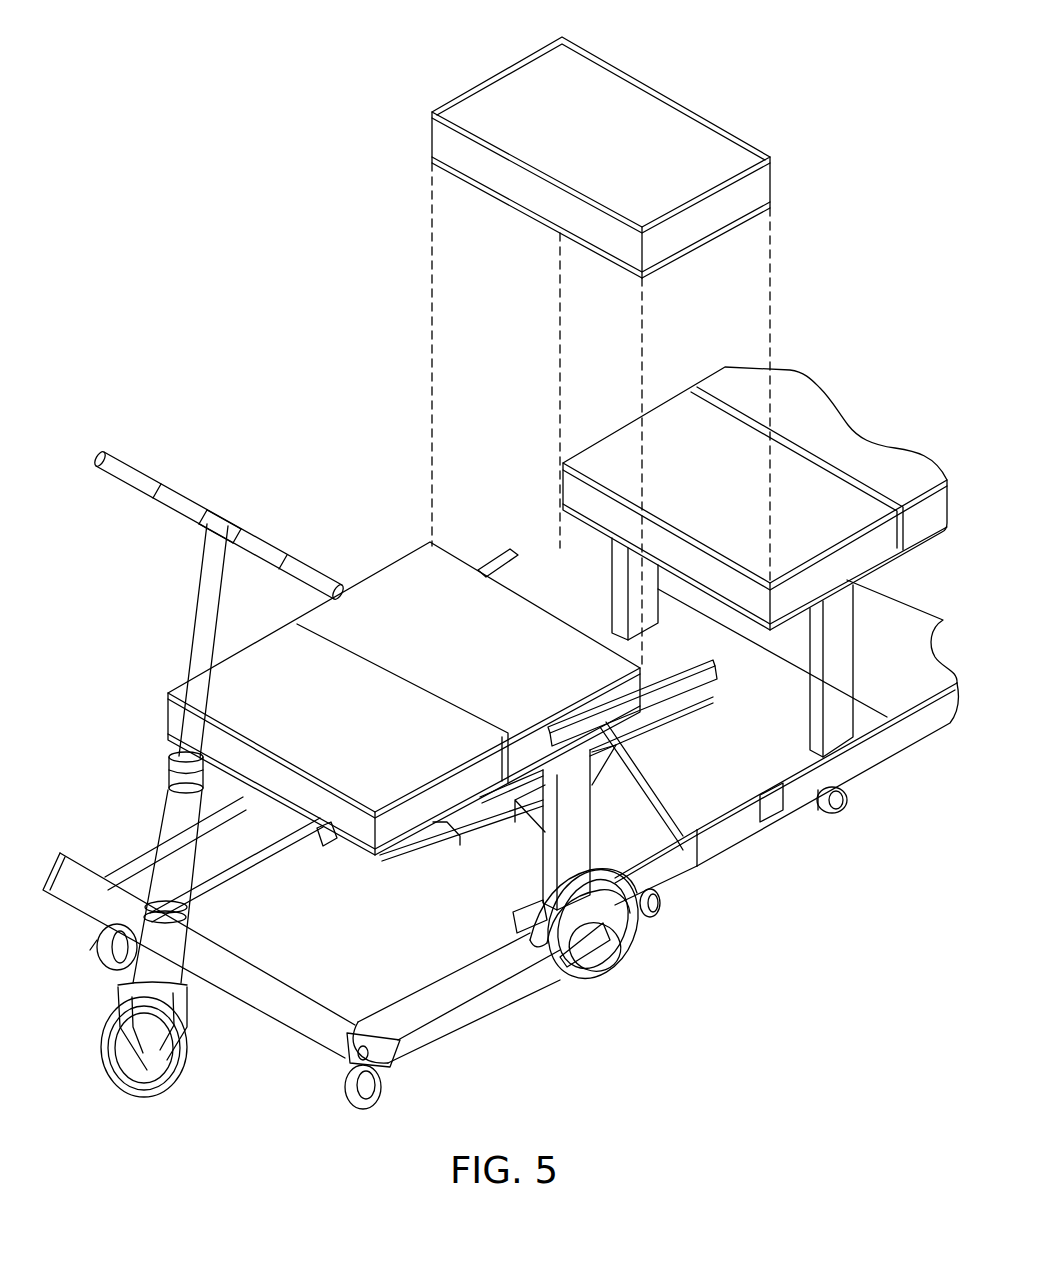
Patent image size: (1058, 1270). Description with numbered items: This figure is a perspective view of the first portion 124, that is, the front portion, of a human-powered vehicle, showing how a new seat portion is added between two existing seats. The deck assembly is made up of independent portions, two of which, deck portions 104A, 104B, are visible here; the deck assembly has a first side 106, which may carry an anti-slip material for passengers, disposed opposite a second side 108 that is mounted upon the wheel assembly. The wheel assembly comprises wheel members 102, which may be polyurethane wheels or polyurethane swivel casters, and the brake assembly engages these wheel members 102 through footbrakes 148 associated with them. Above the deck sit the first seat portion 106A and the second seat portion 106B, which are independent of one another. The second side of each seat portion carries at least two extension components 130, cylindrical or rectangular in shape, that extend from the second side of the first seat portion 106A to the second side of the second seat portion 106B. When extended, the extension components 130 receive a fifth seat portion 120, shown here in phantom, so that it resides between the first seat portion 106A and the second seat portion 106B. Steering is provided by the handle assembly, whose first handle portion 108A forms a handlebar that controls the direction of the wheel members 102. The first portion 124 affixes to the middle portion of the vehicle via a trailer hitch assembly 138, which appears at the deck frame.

The first portion 124 is at (871, 41).
The fifth seat portion 120 is at (619, 150).
The second seat portion 106B is at (745, 493).
The first seat portion 106A is at (496, 643).
The first side 106 is at (723, 782).
The extension components 130 is at (500, 560).
The deck portion 104B is at (754, 748).
The deck portion 104A is at (253, 833).
The second side 108 is at (707, 830).
The first handle portion 108A is at (182, 453).
The trailer hitch assembly 138 is at (673, 867).
The footbrakes 148 is at (603, 970).
The wheel members 102 is at (95, 960).